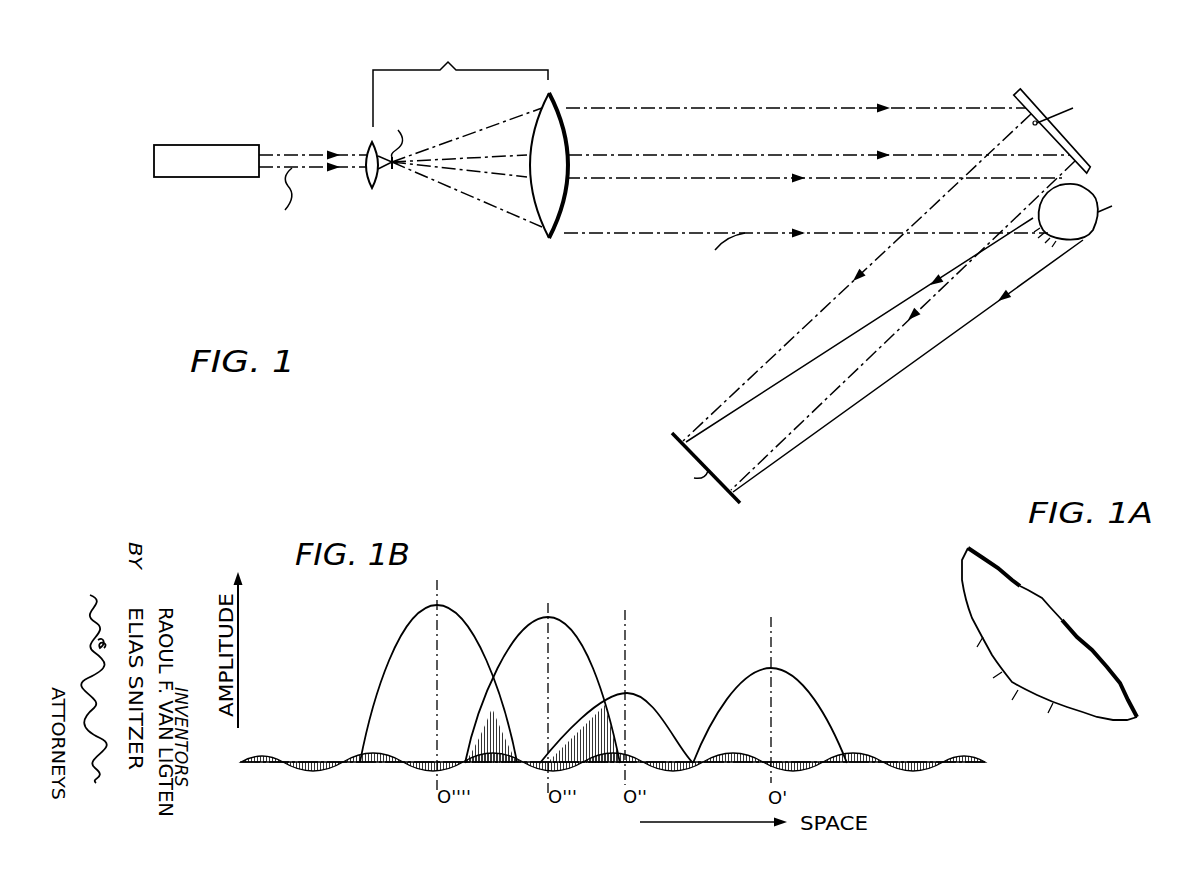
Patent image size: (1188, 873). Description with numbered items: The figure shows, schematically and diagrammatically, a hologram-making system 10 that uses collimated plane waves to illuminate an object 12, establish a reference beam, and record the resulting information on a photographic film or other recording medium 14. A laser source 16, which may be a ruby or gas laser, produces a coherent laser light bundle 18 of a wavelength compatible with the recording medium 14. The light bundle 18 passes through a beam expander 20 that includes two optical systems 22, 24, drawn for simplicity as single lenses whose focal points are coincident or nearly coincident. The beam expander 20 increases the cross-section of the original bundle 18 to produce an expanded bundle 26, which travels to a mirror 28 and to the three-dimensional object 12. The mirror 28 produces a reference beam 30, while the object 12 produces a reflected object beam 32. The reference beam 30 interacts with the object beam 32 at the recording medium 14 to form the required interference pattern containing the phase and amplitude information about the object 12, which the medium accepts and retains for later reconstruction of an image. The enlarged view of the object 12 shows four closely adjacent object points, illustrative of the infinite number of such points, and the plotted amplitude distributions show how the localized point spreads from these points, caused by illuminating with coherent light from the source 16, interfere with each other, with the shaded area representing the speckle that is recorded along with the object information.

In FIG. 1, the hologram-making system 10 is at (560, 344).
In FIG. 1, the object 12 is at (1088, 226).
In FIG. 1A, the object 12 is at (1063, 625).
In FIG. 1, the photographic film or other recording medium 14 is at (672, 433).
In FIG. 1, the laser source 16 is at (220, 147).
In FIG. 1, the laser light bundle 18 is at (307, 157).
In FIG. 1, the beam expander 20 is at (469, 130).
In FIG. 1, the first optical system 22 is at (367, 181).
In FIG. 1, the second optical system 24 is at (553, 108).
In FIG. 1, the expanded bundle 26 is at (766, 105).
In FIG. 1, the mirror 28 is at (1048, 136).
In FIG. 1, the reference beam 30 is at (882, 347).
In FIG. 1, the reflected object beam 32 is at (940, 341).